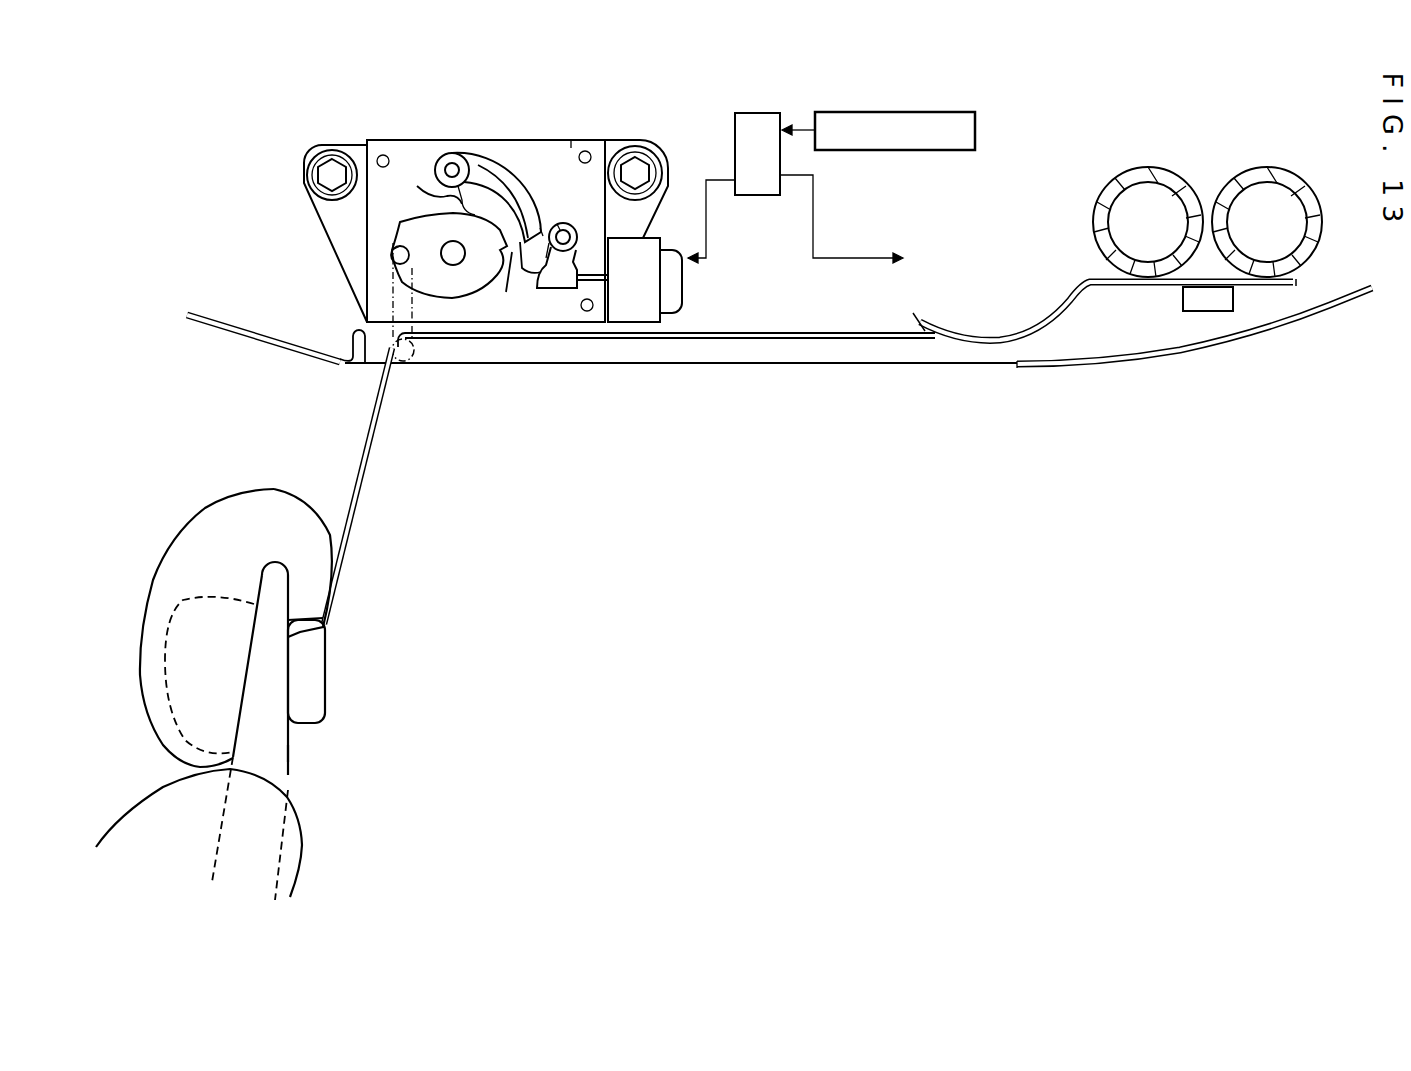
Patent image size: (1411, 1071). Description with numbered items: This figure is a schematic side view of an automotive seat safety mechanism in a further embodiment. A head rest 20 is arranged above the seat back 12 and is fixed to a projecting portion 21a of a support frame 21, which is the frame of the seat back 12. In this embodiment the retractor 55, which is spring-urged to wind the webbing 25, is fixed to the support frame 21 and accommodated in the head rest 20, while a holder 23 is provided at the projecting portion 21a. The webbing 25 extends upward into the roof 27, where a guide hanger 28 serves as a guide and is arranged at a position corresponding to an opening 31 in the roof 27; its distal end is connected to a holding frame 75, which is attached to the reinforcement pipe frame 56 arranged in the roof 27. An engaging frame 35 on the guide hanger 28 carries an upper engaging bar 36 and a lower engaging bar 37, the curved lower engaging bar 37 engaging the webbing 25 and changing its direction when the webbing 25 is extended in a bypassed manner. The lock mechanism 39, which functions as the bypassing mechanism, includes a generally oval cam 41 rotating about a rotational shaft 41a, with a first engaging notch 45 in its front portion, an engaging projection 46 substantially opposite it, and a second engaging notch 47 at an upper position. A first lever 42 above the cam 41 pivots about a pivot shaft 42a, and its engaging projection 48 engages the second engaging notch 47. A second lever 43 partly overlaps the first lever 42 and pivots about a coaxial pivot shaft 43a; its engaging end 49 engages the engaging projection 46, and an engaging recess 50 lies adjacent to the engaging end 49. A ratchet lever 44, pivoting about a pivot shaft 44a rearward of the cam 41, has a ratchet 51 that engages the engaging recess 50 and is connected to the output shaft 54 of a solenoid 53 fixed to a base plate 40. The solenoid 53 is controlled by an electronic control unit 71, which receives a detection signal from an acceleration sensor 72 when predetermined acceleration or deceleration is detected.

The seat back 12 is at (308, 834).
The head rest 20 is at (198, 546).
The support frame 21 is at (239, 831).
The projecting portion 21a is at (282, 761).
The holder 23 is at (317, 682).
The webbing 25 is at (366, 465).
The roof 27 is at (1088, 368).
The guide hanger 28 is at (823, 366).
The opening 31 is at (1020, 348).
The engaging frame 35 is at (392, 296).
The upper engaging bar 36 is at (393, 241).
The lower engaging bar 37 is at (405, 364).
The lock mechanism 39 is at (458, 138).
The base plate 40 is at (571, 148).
The cam 41 is at (400, 220).
The rotational shaft 41a is at (455, 262).
The first lever 42 is at (487, 163).
The pivot shaft 42a is at (440, 160).
The second lever 43 is at (523, 193).
The pivot shaft 43a is at (409, 144).
The ratchet lever 44 is at (543, 276).
The pivot shaft 44a is at (567, 232).
The first engaging notch 45 is at (398, 248).
The engaging projection 46 is at (507, 268).
The second engaging notch 47 is at (452, 230).
The engaging projection 48 is at (435, 184).
The engaging end 49 is at (516, 250).
The engaging recess 50 is at (540, 228).
The ratchet 51 is at (557, 224).
The solenoid 53 is at (675, 287).
The output shaft 54 is at (575, 283).
The retractor 55 is at (200, 620).
The reinforcement pipe frame 56 is at (1180, 186).
The electronic control unit (ECU) 71 is at (733, 136).
The acceleration (G) sensor 72 is at (977, 136).
The holding frame 75 is at (1078, 303).